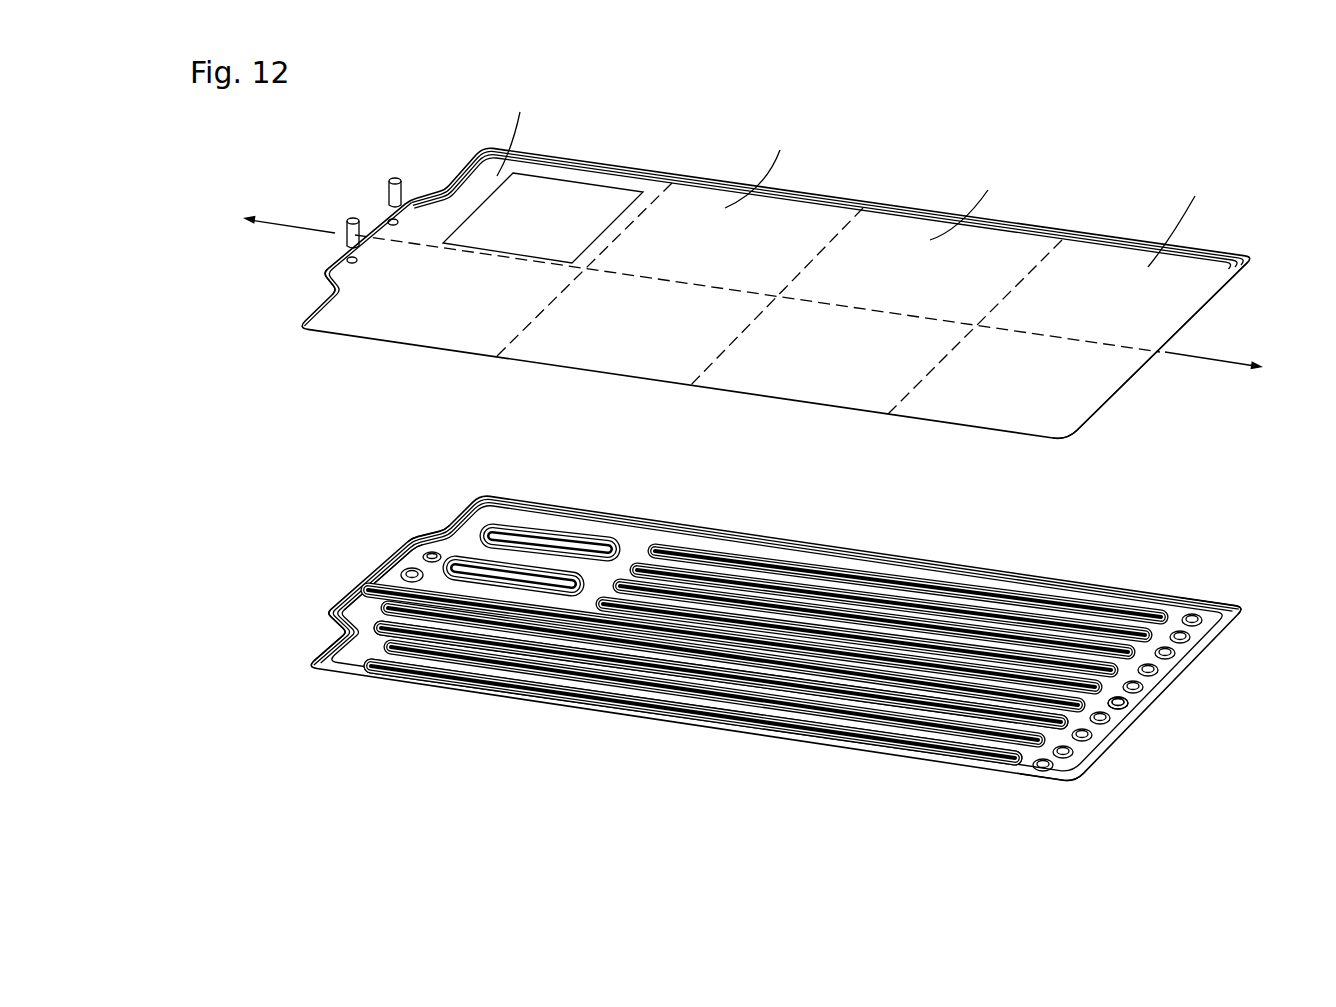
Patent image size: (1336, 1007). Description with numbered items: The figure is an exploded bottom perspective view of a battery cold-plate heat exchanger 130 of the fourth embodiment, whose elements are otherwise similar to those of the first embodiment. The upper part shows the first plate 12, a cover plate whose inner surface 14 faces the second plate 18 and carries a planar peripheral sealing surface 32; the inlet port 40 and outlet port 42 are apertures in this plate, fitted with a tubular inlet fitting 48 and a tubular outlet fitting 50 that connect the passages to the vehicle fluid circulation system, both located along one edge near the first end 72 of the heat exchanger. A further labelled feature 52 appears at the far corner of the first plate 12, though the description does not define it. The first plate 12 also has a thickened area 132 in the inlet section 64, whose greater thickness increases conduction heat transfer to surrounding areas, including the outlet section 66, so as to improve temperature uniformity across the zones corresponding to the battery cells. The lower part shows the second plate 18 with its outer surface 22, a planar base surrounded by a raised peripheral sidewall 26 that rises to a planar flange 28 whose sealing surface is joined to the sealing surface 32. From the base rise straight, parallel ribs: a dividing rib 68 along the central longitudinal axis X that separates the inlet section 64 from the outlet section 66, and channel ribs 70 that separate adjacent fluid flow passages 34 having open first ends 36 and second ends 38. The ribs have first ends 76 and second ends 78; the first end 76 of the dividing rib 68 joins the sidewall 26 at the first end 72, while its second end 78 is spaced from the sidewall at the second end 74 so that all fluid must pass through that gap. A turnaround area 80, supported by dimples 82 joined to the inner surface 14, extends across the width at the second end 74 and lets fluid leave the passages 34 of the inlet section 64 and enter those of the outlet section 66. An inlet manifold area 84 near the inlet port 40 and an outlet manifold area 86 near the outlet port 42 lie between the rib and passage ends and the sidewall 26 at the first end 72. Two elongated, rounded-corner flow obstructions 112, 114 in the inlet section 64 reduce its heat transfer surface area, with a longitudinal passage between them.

The first plate 12 is at (1205, 315).
The inner surface of first plate 14 is at (1118, 362).
The second plate 18 is at (1187, 673).
The outer surface of second plate 22 is at (1043, 770).
The peripheral sidewall 26 is at (1178, 603).
The planar flange 28 is at (1138, 591).
The peripheral sealing surface of first plate 32 is at (1093, 258).
The fluid flow passages 34 is at (800, 718).
The first ends of fluid flow passages 36 is at (378, 656).
The second ends of fluid flow passages 38 is at (1063, 714).
The inlet port 40 is at (386, 222).
The outlet port 42 is at (346, 262).
The tubular inlet fitting 48 is at (400, 190).
The tubular outlet fitting 50 is at (348, 228).
The flange 52 is at (1248, 258).
The inlet section 64 is at (808, 600).
The outlet section 66 is at (662, 680).
The dividing rib 68 is at (518, 600).
The channel ribs 70 is at (688, 550).
The first end of heat exchanger 72 is at (358, 577).
The second end of heat exchanger 74 is at (1150, 708).
The first ends of ribs 76 is at (372, 626).
The second ends of ribs 78 is at (1200, 630).
The turnaround area 80 is at (1210, 631).
The dimples 82 is at (450, 514).
The inlet manifold area 84 is at (411, 550).
The outlet manifold area 86 is at (343, 641).
The flow obstruction 112 is at (548, 541).
The flow obstruction 114 is at (500, 578).
The heat exchanger 130 is at (268, 188).
The thickened area 132 is at (558, 206).